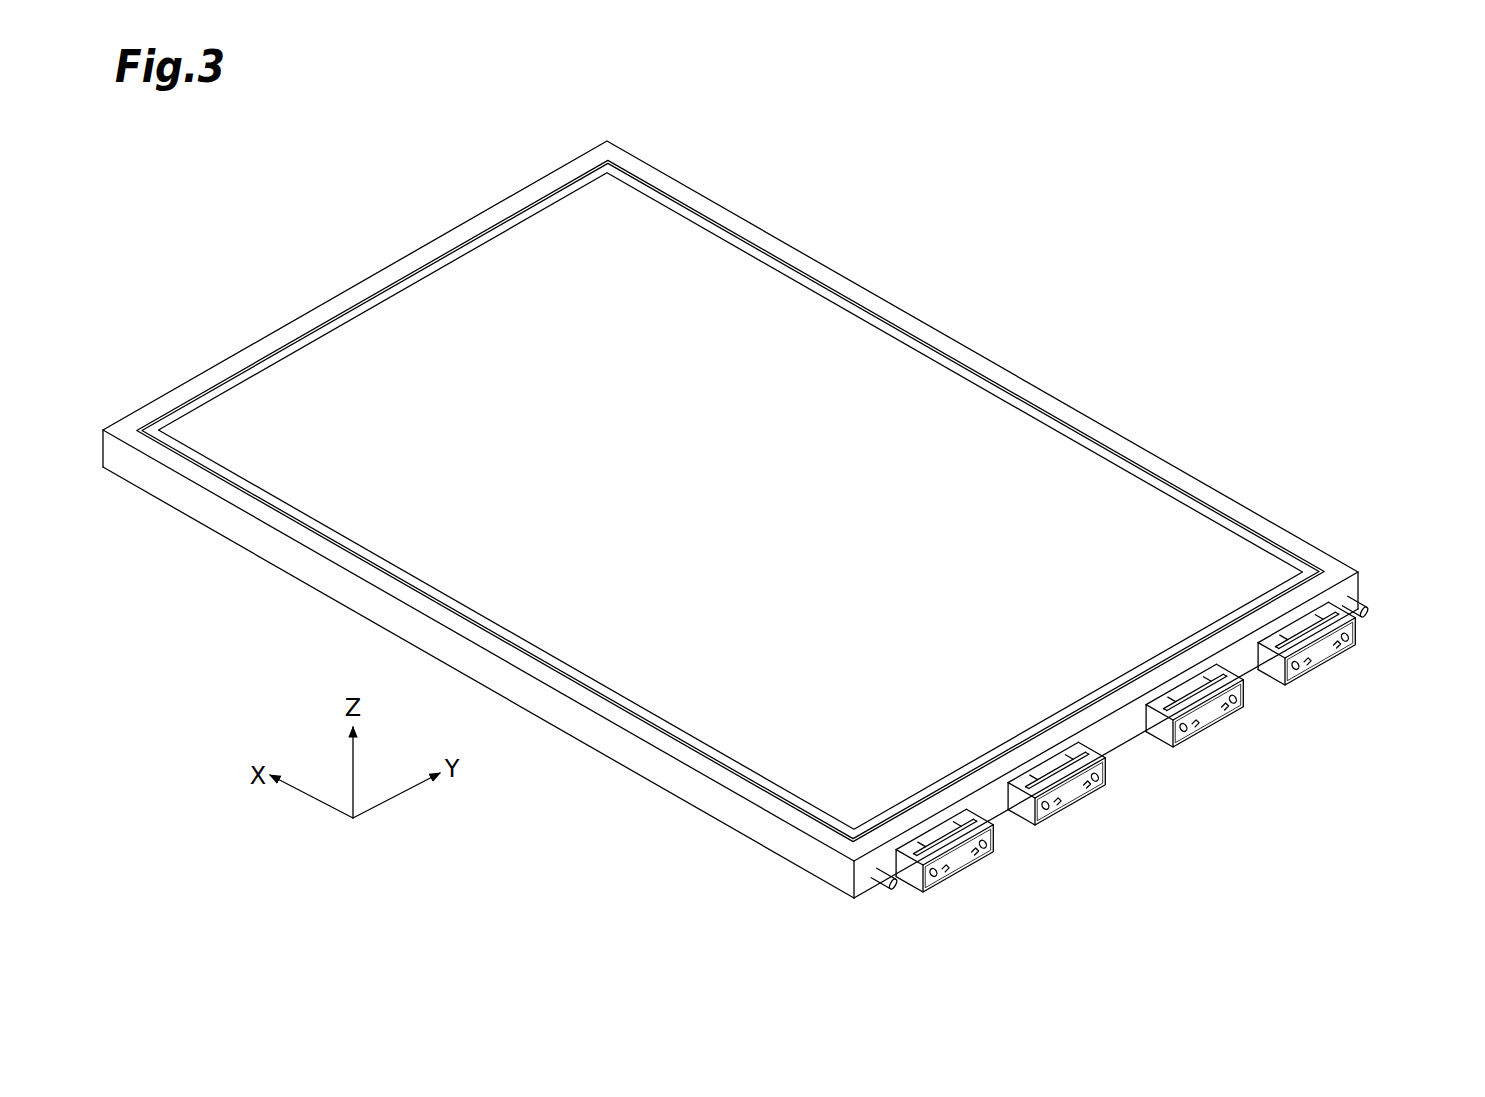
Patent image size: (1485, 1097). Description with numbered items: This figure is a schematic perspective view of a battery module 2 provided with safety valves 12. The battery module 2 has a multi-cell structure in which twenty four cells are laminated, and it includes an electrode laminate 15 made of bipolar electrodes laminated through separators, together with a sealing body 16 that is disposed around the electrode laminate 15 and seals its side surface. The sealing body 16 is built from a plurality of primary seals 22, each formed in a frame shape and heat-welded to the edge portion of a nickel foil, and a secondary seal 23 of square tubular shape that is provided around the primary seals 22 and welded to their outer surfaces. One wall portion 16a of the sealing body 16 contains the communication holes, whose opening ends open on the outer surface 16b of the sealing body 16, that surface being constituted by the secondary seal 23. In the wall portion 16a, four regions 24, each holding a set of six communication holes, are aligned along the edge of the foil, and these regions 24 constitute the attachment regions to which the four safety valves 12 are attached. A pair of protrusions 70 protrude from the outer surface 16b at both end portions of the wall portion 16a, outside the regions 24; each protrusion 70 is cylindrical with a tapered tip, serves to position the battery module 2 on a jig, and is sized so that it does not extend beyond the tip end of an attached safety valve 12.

The battery module 2 is at (775, 547).
The safety valve 12 is at (1130, 723).
The electrode laminate 15 is at (922, 393).
The sealing body 16 is at (730, 519).
The wall portion 16a is at (1133, 742).
The outer surface 16b is at (655, 768).
The primary seal 22 is at (1178, 497).
The secondary seal 23 is at (1231, 513).
The region 24 is at (945, 838).
The protrusion 70 is at (895, 890).